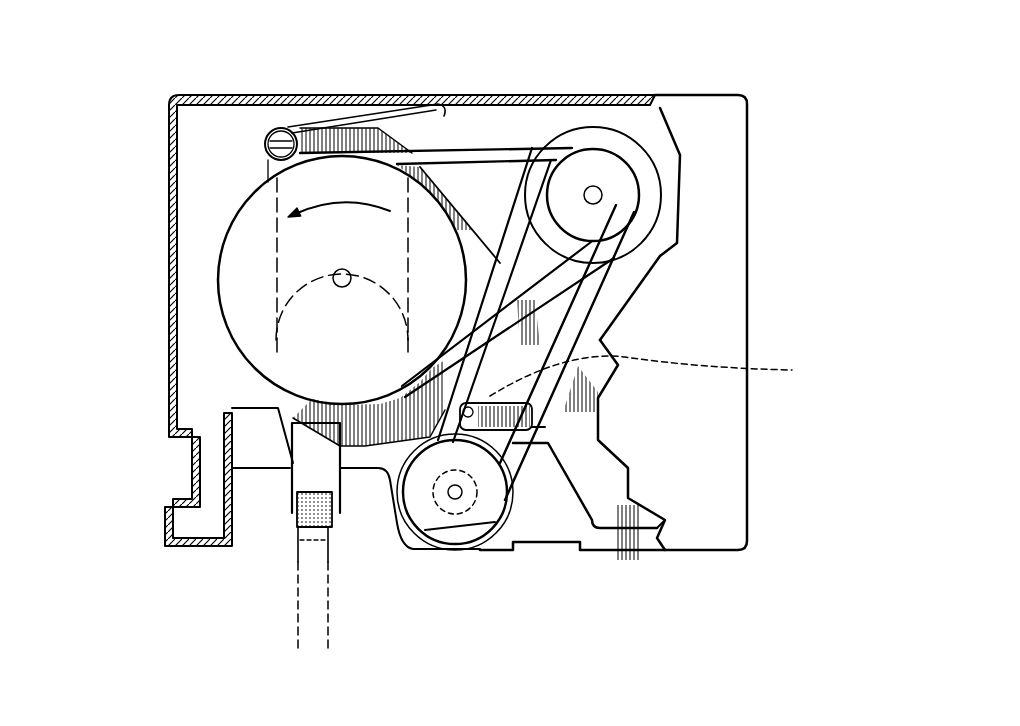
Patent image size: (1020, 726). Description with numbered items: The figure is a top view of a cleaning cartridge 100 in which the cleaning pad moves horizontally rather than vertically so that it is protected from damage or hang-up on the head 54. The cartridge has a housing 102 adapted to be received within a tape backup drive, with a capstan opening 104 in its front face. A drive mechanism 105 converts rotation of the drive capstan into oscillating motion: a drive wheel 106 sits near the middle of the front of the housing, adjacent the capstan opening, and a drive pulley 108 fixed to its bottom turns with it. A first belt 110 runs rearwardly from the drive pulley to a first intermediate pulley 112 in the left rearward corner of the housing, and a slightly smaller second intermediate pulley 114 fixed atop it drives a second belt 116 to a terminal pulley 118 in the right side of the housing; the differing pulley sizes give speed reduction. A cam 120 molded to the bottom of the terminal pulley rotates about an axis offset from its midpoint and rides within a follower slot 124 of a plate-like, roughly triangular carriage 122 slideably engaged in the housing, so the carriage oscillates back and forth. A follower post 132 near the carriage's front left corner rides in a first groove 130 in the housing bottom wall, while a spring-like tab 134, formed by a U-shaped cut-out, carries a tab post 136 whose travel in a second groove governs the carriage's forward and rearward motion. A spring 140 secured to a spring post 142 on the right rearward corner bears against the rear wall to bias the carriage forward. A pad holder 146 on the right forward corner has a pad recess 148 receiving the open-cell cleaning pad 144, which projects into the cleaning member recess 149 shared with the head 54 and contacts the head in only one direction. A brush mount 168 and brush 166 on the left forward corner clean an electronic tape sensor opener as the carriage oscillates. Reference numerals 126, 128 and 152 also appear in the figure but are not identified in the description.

The cleaning cartridge 100 is at (820, 68).
The housing 102 is at (733, 242).
The capstan opening 104 is at (480, 550).
The drive mechanism 105 is at (535, 128).
The drive wheel 106 is at (453, 547).
The drive pulley 108 is at (455, 493).
The first belt 110 is at (610, 292).
The first intermediate pulley 112 is at (652, 202).
The second intermediate pulley 114 is at (612, 165).
The second belt 116 is at (478, 152).
The terminal pulley 118 is at (258, 205).
The cam 120 is at (290, 333).
The carriage 122 is at (585, 437).
The follower slot 124 is at (277, 237).
The support block 126 is at (280, 402).
The movement arrow 128 is at (581, 473).
The first groove 130 is at (657, 520).
The follower post 132 is at (648, 518).
The tab 134 is at (460, 400).
The tab post 136 is at (660, 371).
The spring 140 is at (340, 120).
The spring post 142 is at (285, 128).
The cleaning pad 144 is at (298, 510).
The pad holder 146 is at (297, 465).
The pad recess 148 is at (293, 477).
The cleaning member recess 149 is at (368, 503).
The assembly 152 is at (588, 702).
The brush 166 is at (635, 530).
The brush mount 168 is at (612, 490).
The head 54 is at (312, 618).